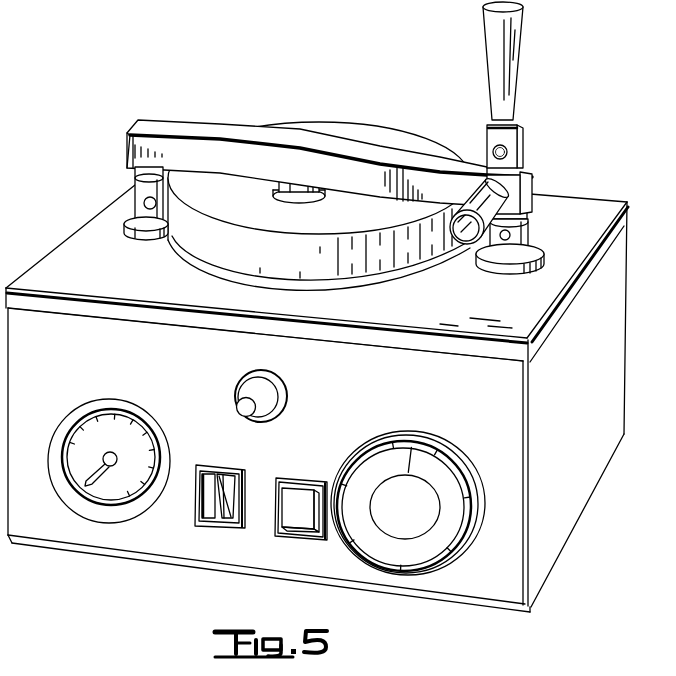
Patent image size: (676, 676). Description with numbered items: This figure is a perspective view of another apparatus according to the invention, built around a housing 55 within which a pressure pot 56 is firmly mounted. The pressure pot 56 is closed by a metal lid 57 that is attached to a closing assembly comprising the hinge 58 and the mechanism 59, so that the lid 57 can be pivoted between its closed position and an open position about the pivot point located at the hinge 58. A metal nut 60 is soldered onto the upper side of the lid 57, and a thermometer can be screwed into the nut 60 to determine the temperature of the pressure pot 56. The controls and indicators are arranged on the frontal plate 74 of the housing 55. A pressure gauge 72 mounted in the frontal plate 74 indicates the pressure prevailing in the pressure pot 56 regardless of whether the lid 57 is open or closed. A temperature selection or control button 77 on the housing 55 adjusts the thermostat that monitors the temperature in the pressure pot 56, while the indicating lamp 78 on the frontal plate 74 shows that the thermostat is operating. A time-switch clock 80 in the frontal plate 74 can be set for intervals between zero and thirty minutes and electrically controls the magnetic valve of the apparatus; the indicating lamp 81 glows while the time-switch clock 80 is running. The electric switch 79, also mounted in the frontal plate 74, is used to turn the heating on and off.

The housing 55 is at (568, 544).
The pressure pot 56 is at (363, 285).
The lid 57 is at (362, 221).
The hinge 58 is at (136, 195).
The mechanism 59 is at (521, 143).
The metal nut 60 is at (322, 187).
The pressure gauge 72 is at (158, 426).
The frontal plate 74 is at (488, 409).
The temperature selection or control button 77 is at (287, 392).
The indicating lamp 78 is at (208, 514).
The electric switch 79 is at (227, 514).
The time-switch clock 80 is at (453, 497).
The indicating lamp 81 is at (302, 528).